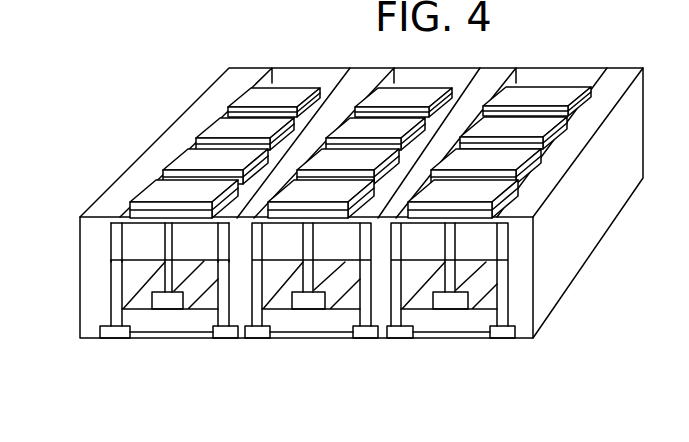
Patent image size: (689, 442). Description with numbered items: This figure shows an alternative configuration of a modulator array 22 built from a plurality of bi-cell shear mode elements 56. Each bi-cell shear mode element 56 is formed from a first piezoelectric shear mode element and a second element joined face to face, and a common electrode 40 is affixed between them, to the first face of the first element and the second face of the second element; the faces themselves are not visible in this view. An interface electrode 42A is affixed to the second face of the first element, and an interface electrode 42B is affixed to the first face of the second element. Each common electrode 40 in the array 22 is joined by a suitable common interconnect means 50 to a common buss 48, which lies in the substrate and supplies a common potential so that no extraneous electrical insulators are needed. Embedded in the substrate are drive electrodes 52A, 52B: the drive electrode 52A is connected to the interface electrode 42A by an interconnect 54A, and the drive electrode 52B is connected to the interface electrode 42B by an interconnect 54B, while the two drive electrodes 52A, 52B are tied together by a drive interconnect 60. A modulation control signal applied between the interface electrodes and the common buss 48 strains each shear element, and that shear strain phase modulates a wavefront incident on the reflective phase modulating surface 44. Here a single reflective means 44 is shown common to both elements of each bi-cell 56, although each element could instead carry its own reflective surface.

The array 22 is at (182, 0).
The reflective phase modulating surface 44 is at (292, 97).
The bi-cell shear mode element 56 is at (138, 243).
The interface electrode 42A is at (116, 241).
The interface electrode 42B is at (222, 245).
The interconnect 54A is at (113, 303).
The interconnect 54B is at (227, 293).
The common electrode 40 is at (176, 244).
The common buss 48 is at (163, 299).
The common interconnect means 50 is at (184, 293).
The drive interconnect 60 is at (173, 334).
The drive electrode 52A is at (110, 340).
The drive electrode 52B is at (228, 328).